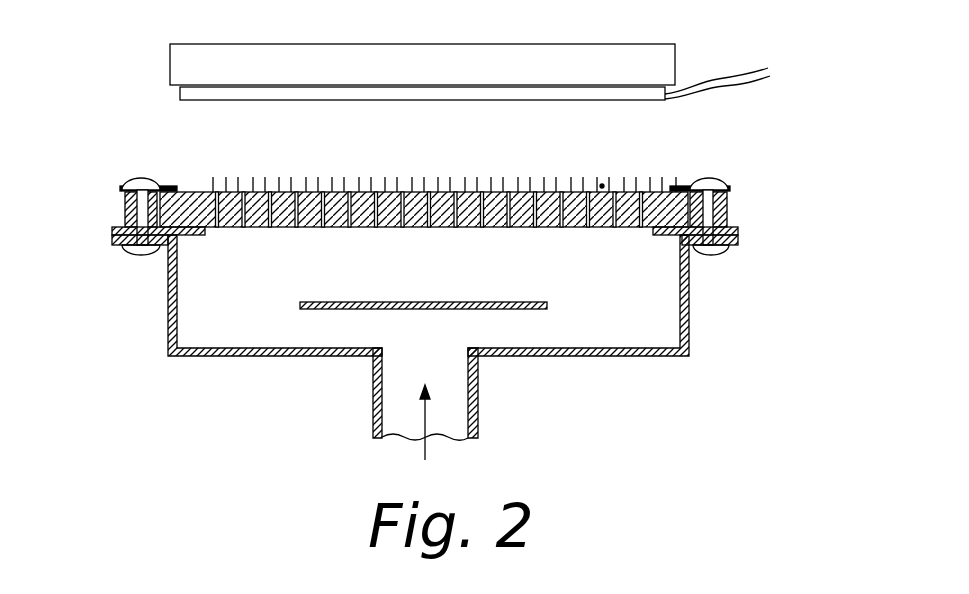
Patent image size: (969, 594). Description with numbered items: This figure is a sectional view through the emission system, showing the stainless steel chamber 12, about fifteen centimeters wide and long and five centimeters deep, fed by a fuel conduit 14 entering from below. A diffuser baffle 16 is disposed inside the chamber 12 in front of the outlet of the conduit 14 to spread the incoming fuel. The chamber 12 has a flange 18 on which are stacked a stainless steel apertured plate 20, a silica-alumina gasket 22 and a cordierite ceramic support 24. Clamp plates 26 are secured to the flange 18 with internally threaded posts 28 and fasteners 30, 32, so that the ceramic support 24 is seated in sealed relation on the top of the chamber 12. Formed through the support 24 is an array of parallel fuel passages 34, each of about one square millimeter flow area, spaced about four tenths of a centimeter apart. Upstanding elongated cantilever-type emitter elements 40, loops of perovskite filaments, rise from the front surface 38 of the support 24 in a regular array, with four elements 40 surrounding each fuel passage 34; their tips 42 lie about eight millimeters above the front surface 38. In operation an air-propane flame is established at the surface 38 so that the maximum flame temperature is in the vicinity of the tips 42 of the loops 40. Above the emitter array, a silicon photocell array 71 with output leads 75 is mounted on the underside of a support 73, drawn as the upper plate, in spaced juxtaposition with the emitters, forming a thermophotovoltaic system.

The chamber 12 is at (697, 313).
The fuel conduit 14 is at (478, 405).
The diffuser baffle 16 is at (418, 302).
The flange 18 is at (738, 245).
The apertured plate 20 is at (112, 238).
The gasket 22 is at (113, 228).
The support 24 is at (602, 185).
The clamp plates 26 is at (165, 185).
The internally threaded posts 28 is at (125, 205).
The fastener 30 is at (135, 177).
The fastener 32 is at (142, 257).
The fuel passages 34 is at (298, 228).
The front surface 38 is at (488, 190).
The emitter elements 40 is at (293, 187).
The tips 42 is at (262, 176).
The silicon photocell array 71 is at (180, 93).
The substrate plate 73 is at (170, 62).
The output leads 75 is at (692, 82).